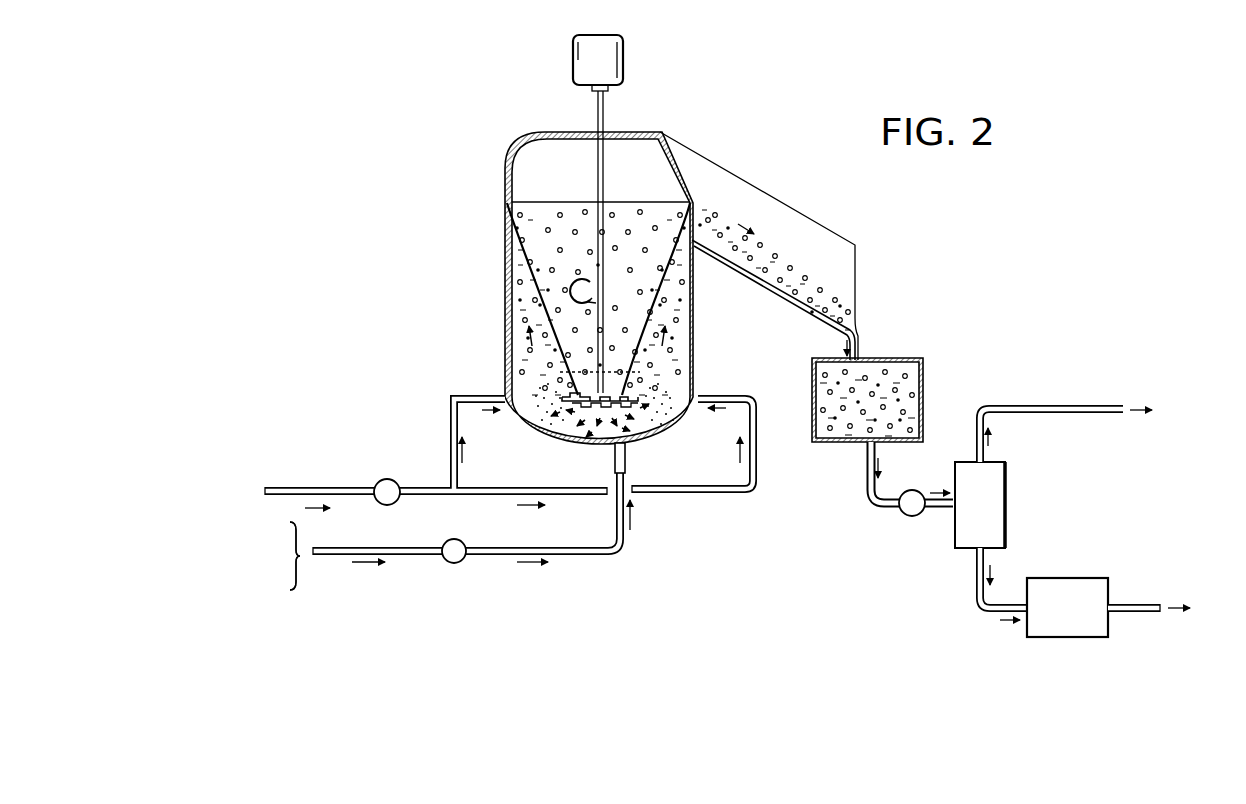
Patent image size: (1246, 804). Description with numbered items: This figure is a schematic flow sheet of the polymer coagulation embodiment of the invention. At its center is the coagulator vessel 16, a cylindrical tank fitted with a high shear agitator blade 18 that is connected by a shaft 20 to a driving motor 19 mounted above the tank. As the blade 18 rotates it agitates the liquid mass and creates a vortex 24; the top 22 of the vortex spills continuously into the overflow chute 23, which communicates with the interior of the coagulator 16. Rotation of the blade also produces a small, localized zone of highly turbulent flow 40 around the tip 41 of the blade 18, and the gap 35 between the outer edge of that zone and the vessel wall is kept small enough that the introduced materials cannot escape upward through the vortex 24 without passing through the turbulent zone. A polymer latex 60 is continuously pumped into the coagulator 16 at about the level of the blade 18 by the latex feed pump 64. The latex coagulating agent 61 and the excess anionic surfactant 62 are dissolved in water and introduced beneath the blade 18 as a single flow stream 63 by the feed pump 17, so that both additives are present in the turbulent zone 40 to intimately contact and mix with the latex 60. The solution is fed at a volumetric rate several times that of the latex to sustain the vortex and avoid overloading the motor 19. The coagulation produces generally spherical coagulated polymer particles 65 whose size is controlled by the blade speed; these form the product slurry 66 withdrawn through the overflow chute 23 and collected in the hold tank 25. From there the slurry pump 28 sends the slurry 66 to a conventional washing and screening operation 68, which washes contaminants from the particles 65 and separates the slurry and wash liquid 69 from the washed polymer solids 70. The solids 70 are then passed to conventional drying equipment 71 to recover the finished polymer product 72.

The coagulator vessel 16 is at (507, 232).
The feed pump 17 is at (454, 563).
The high shear agitator blade 18 is at (580, 402).
The driving motor 19 is at (624, 63).
The shaft 20 is at (604, 172).
The top of the vortex 22 is at (657, 202).
The overflow chute 23 is at (762, 282).
The vortex 24 is at (526, 232).
The hold tank 25 is at (835, 446).
The slurry pump 28 is at (912, 516).
The gap 35 is at (527, 384).
The zone of highly turbulent flow 40 is at (672, 422).
The tip of blade 41 is at (632, 388).
The polymer latex 60 is at (342, 453).
The latex coagulating agent 61 is at (306, 556).
The excess anionic surfactant 62 is at (172, 556).
The single flow stream 63 is at (577, 552).
The latex feed pump 64 is at (377, 484).
The coagulated polymer particles 65 is at (517, 298).
The product slurry 66 is at (862, 338).
The washing and screening operation 68 is at (1000, 520).
The slurry and wash liquid 69 is at (1033, 405).
The washed polymer solids 70 is at (978, 592).
The drying equipment 71 is at (1050, 632).
The finished polymer product 72 is at (1146, 612).